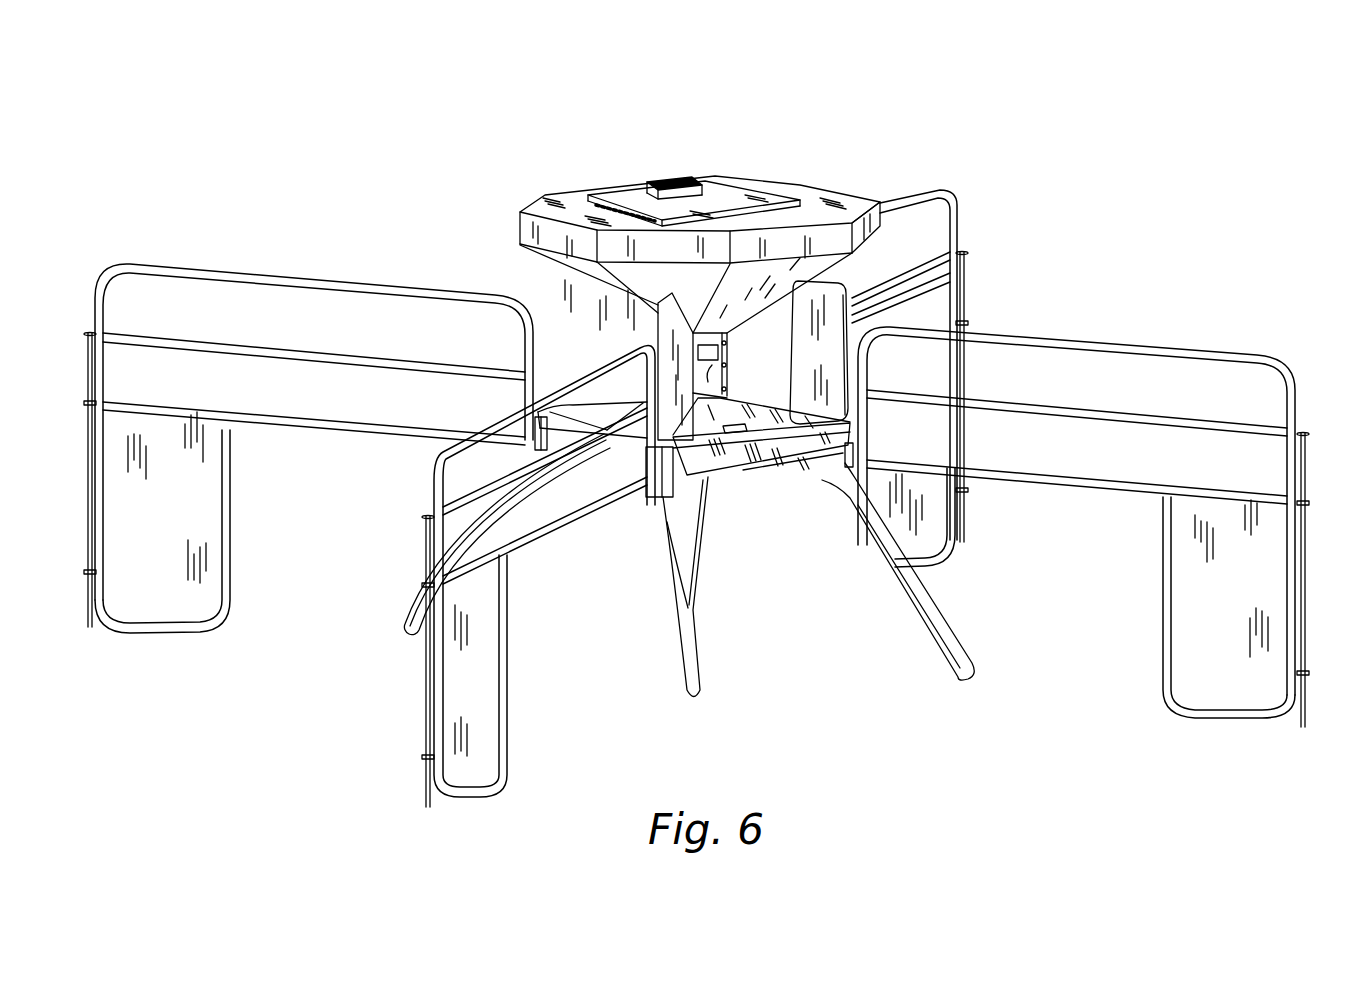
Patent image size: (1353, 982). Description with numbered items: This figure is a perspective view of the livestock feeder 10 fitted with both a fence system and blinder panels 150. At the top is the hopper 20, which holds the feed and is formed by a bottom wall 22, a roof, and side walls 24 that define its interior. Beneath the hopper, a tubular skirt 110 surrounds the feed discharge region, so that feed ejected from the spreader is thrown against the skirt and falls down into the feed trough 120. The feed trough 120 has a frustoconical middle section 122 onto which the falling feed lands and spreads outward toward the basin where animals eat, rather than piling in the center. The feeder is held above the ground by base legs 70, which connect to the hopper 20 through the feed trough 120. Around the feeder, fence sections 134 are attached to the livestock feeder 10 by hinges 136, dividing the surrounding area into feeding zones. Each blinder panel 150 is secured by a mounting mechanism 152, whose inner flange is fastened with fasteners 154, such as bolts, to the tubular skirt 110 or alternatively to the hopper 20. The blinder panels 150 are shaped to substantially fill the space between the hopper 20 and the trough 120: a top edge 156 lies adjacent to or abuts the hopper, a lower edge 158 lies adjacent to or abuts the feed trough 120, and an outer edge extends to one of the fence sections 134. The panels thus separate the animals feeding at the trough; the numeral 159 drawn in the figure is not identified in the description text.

The livestock feeder 10 is at (1030, 126).
The hopper 20 is at (526, 233).
The bottom wall 22 is at (583, 273).
The side walls 24 is at (876, 222).
The base legs 70 is at (690, 614).
The tubular skirt 110 is at (703, 331).
The feed trough 120 is at (777, 440).
The frustoconical middle section 122 is at (745, 470).
The fence sections 134 is at (1118, 345).
The hinges 136 is at (840, 444).
The blinder panels 150 is at (945, 265).
The mounting mechanism 152 is at (728, 357).
The fasteners 154 is at (728, 346).
The top edge 156 is at (862, 283).
The lower edge 158 is at (789, 421).
The panel rail 159 is at (852, 315).